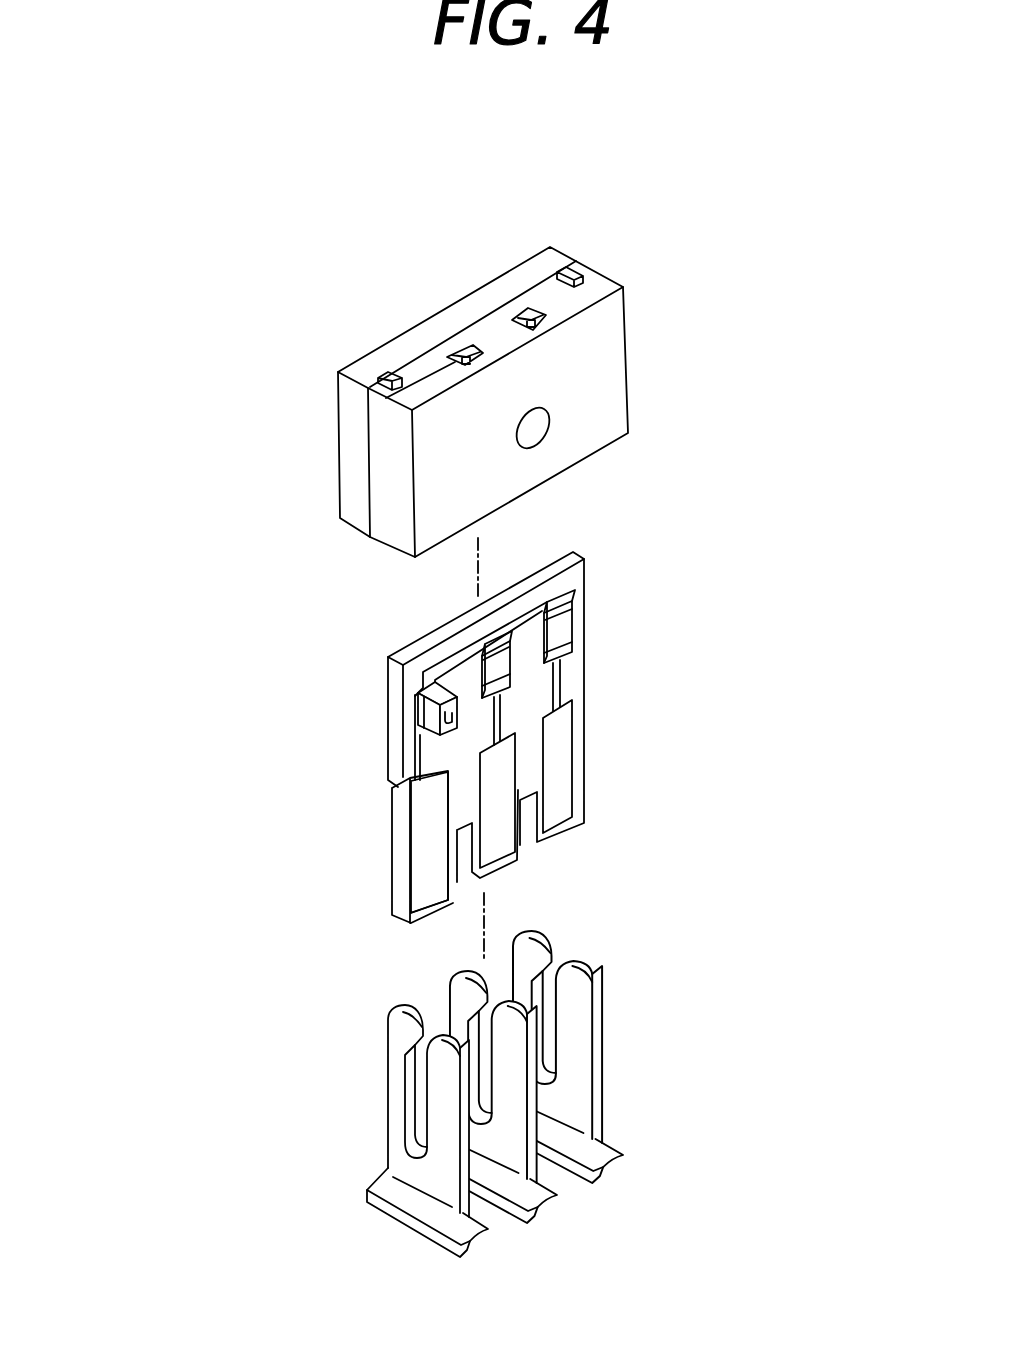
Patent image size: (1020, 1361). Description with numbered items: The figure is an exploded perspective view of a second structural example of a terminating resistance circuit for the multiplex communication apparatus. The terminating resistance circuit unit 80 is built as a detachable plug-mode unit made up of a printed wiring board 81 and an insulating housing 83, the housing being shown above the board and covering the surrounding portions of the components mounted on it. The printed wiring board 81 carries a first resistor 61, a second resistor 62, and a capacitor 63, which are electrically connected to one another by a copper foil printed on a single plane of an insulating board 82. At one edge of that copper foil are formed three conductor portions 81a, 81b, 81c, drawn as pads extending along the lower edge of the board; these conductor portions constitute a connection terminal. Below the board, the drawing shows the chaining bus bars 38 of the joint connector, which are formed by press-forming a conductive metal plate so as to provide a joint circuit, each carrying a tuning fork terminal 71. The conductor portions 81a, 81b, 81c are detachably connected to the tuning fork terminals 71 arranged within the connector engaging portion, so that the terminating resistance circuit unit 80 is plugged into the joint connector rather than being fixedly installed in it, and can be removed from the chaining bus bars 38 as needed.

The terminating resistance circuit unit 80 is at (181, 430).
The insulating housing 83 is at (340, 463).
The printed wiring board 81 is at (388, 694).
The insulating board 82 is at (586, 668).
The first resistor 61 is at (577, 617).
The second resistor 62 is at (503, 645).
The capacitor 63 is at (417, 723).
The conductor portion 81a is at (423, 875).
The conductor portion 81b is at (493, 850).
The conductor portion 81c is at (560, 773).
The chaining bus bar 38 is at (387, 1121).
The tuning fork terminal 71 is at (578, 1043).